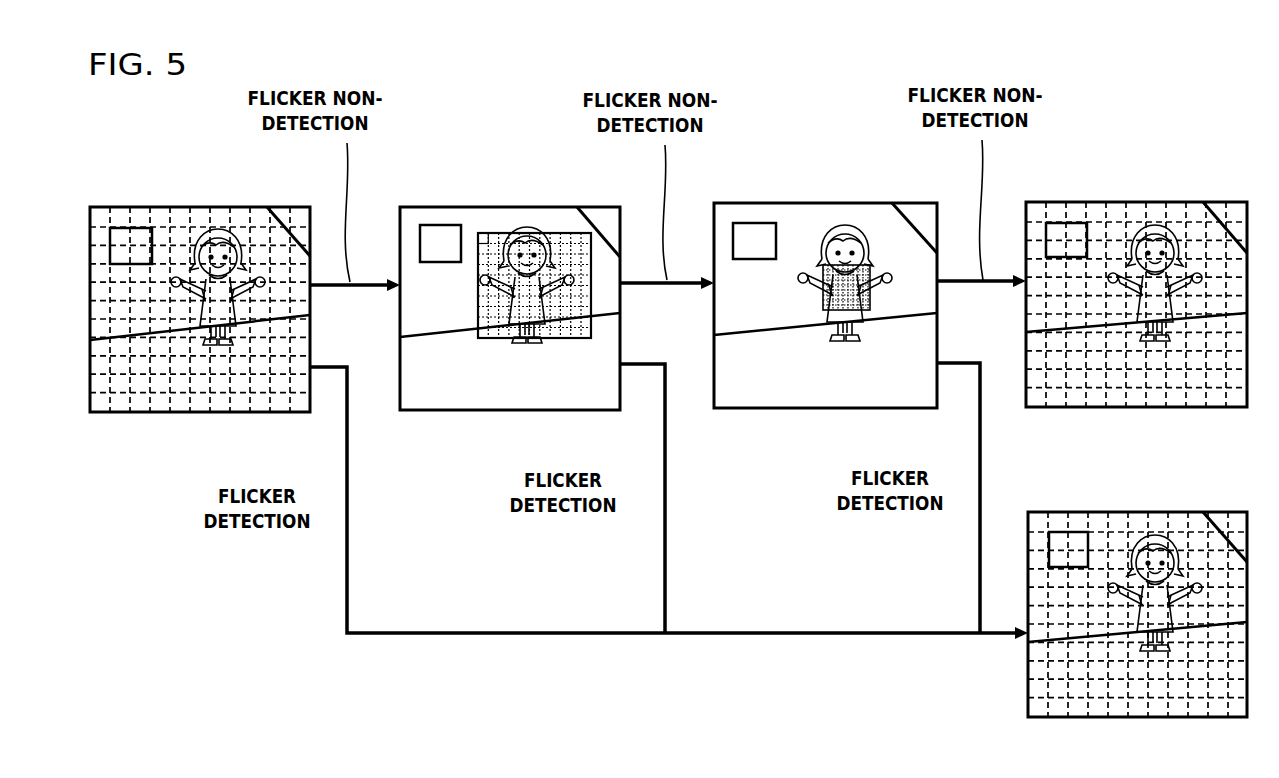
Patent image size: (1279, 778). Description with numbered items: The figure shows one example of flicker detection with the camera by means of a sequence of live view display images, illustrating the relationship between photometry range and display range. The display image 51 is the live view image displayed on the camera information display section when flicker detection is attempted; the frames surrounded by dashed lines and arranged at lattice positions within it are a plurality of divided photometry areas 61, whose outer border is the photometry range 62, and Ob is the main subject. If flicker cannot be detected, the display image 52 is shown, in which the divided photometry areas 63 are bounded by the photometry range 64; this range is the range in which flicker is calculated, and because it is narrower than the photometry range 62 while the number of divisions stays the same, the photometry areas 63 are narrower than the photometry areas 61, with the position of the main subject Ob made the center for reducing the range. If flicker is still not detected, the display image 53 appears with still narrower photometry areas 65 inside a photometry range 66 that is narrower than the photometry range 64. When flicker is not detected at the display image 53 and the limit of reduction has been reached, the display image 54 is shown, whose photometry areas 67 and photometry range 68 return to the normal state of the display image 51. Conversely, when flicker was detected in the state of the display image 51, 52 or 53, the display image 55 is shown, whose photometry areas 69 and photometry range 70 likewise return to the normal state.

The display image 51 is at (200, 282).
The display image 52 is at (510, 279).
The display image 53 is at (825, 277).
The display image 54 is at (1136, 276).
The display image 55 is at (1137, 585).
The photometry areas 61 is at (200, 290).
The photometry range 62 is at (123, 213).
The main subject Ob is at (218, 253).
The photometry areas 63 is at (534, 254).
The photometry range 64 is at (477, 207).
The photometry areas 65 is at (845, 253).
The photometry range 66 is at (830, 238).
The photometry areas 67 is at (1148, 248).
The photometry range 68 is at (1061, 206).
The photometry areas 69 is at (1149, 563).
The photometry range 70 is at (1063, 521).